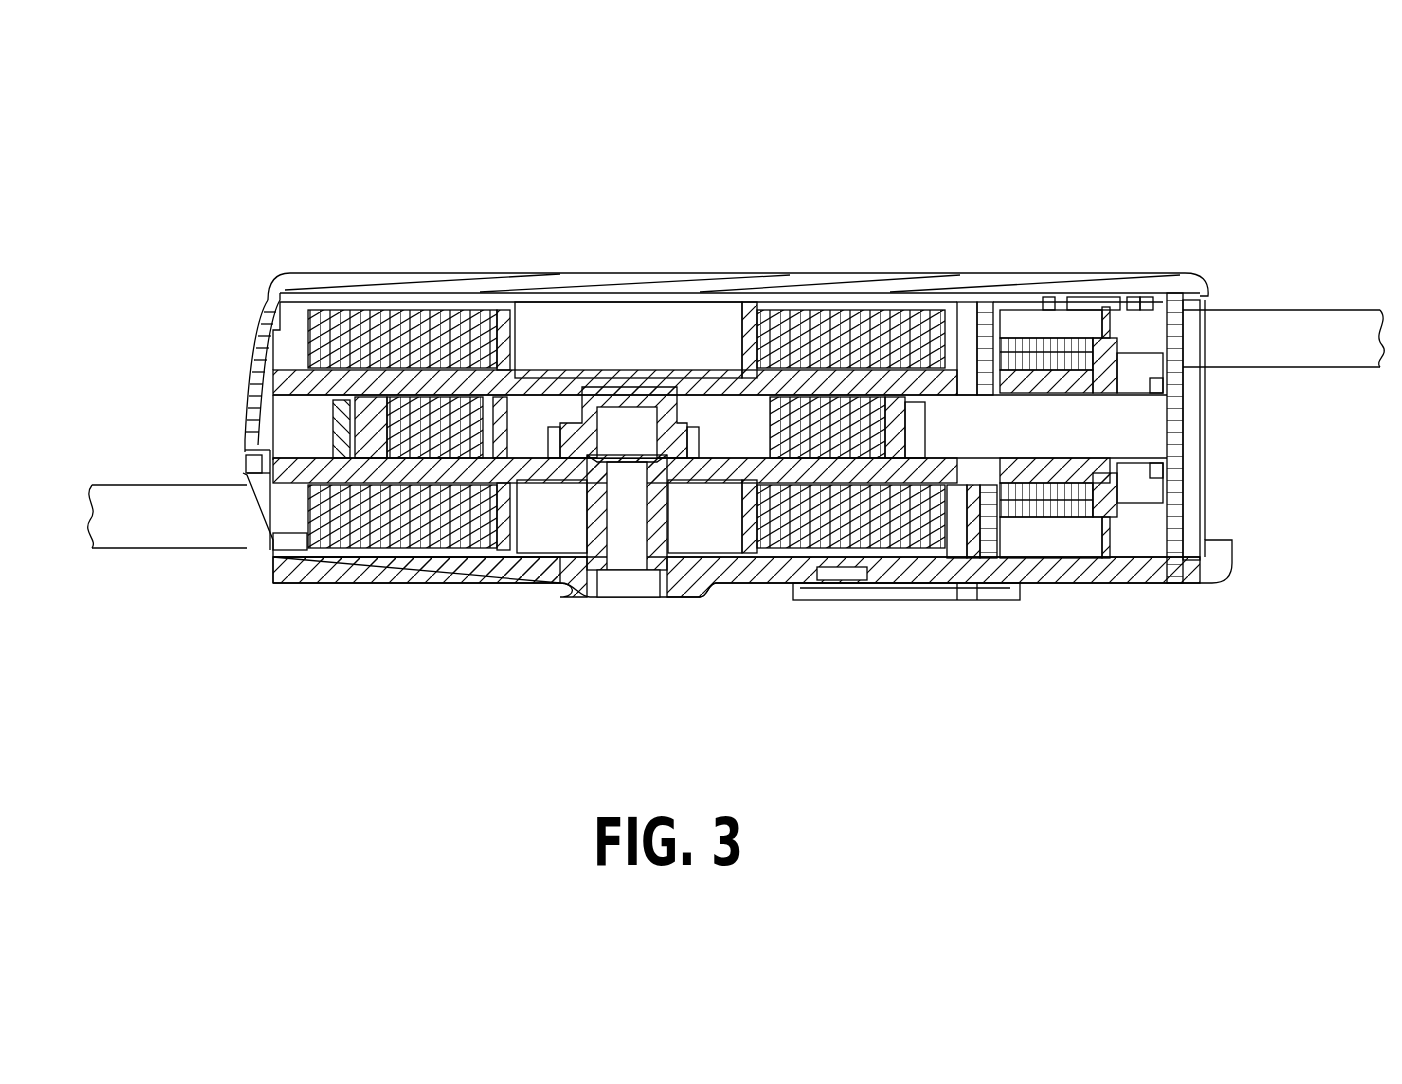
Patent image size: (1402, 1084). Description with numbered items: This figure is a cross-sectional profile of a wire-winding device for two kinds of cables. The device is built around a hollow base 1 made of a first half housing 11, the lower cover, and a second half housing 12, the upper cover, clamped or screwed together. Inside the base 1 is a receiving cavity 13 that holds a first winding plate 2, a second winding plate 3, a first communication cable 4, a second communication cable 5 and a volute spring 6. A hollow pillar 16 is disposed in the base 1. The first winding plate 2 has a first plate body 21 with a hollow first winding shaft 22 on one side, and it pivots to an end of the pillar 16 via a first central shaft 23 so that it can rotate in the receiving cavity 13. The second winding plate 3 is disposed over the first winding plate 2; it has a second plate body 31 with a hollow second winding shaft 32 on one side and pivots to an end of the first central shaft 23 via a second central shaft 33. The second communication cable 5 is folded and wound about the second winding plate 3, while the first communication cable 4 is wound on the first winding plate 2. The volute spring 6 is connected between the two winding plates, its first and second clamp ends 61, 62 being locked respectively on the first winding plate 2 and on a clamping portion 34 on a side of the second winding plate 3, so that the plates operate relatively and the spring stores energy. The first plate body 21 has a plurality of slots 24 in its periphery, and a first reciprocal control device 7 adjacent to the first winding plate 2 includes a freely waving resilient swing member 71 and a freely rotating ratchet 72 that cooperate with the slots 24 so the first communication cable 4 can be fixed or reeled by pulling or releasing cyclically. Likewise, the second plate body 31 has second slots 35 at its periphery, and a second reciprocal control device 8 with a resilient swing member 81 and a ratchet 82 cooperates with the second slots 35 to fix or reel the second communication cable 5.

The base 1 is at (214, 386).
The first winding plate 2 is at (718, 510).
The second winding plate 3 is at (674, 346).
The first communication cable 4 is at (156, 532).
The second communication cable 5 is at (1320, 340).
The volute spring 6 is at (790, 412).
The first reciprocal control device 7 is at (1073, 528).
The second reciprocal control device 8 is at (1073, 330).
The first half housing 11 is at (275, 583).
The second half housing 12 is at (278, 278).
The receiving cavity 13 is at (287, 513).
The pillar 16 is at (660, 503).
The first plate body 21 is at (247, 460).
The first winding shaft 22 is at (513, 527).
The first central shaft 23 is at (628, 400).
The slots 24 is at (965, 475).
The second plate body 31 is at (302, 387).
The second winding shaft 32 is at (508, 320).
The second central shaft 33 is at (610, 390).
The clamping portion 34 is at (450, 400).
The second slots 35 is at (967, 380).
The first clamp end 61 is at (556, 413).
The second clamp end 62 is at (373, 395).
The resilient swing member 71 is at (1113, 483).
The ratchet 72 is at (1037, 500).
The resilient swing member 81 is at (1103, 383).
The ratchet 82 is at (1033, 343).